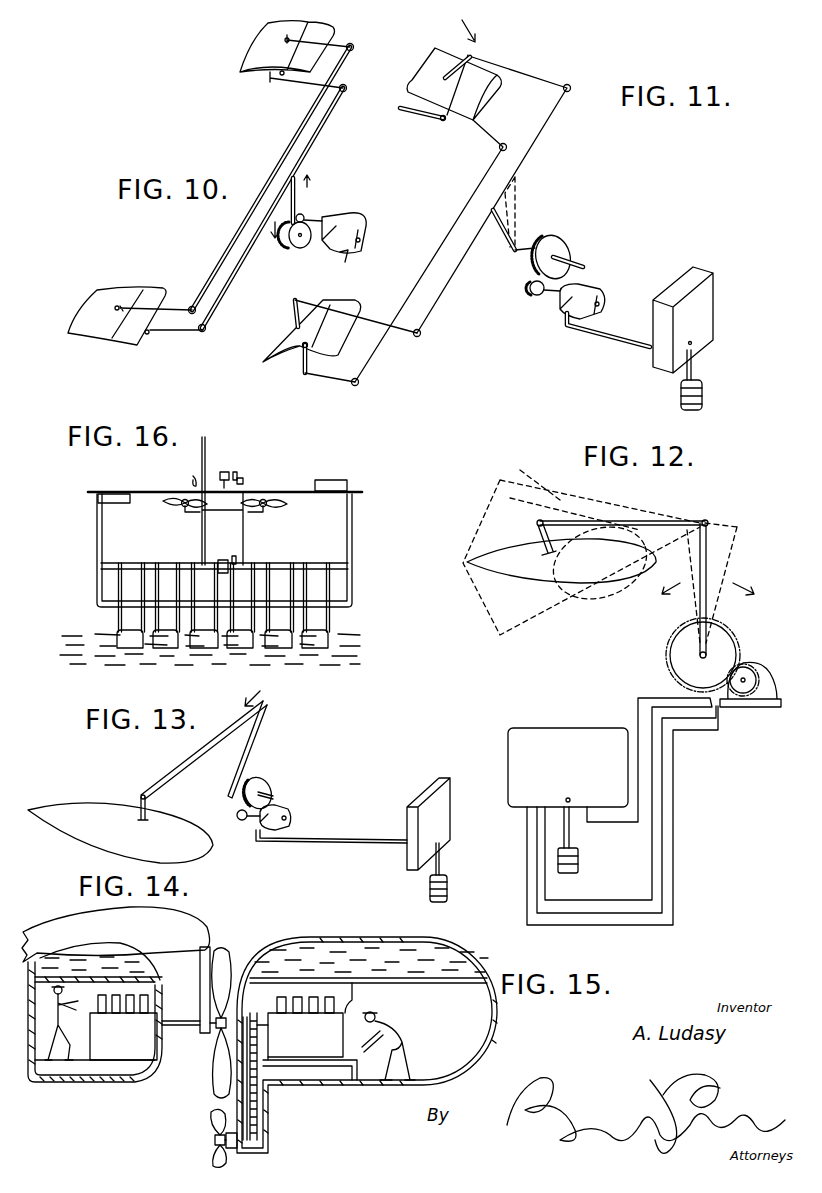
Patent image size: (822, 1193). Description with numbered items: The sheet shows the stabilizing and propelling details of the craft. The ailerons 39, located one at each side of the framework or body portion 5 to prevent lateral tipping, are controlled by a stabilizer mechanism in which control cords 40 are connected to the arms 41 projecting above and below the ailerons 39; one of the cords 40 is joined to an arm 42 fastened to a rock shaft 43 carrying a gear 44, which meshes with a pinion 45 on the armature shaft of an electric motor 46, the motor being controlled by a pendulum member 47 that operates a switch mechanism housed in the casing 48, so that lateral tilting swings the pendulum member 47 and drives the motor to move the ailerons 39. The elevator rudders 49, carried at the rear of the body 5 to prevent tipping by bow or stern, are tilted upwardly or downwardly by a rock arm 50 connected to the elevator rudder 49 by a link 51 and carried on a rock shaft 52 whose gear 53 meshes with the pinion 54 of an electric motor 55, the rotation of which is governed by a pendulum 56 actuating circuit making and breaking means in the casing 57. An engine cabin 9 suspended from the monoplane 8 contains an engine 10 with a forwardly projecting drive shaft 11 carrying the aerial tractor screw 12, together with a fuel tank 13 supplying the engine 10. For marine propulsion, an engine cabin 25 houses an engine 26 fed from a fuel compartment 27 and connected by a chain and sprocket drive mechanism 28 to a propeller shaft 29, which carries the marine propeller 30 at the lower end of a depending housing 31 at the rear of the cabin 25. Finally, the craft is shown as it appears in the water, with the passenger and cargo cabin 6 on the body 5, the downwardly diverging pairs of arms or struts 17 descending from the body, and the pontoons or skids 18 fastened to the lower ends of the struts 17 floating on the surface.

In FIG. 16, the framework or body portion 5 is at (90, 540).
In FIG. 16, the passenger and cargo cabin 6 is at (225, 503).
In FIG. 14, the monoplane 8 is at (116, 934).
In FIG. 14, the engine cabin 9 is at (152, 1066).
In FIG. 14, the engine 10 is at (123, 1027).
In FIG. 14, the drive shaft 11 is at (172, 1019).
In FIG. 16, the tractor screw or propeller 12 is at (258, 510).
In FIG. 14, the tractor screw or propeller 12 is at (226, 966).
In FIG. 14, the fuel tank 13 is at (143, 955).
In FIG. 16, the arms or struts 17 is at (328, 624).
In FIG. 16, the pontoon or skid 18 is at (117, 632).
In FIG. 15, the engine cabin 25 is at (493, 1047).
In FIG. 15, the engine 26 is at (304, 1020).
In FIG. 15, the compartment 27 is at (445, 965).
In FIG. 15, the chain and sprocket drive mechanism 28 is at (262, 1106).
In FIG. 14, the propeller shaft 29 is at (213, 1124).
In FIG. 14, the marine propeller 30 is at (212, 1149).
In FIG. 15, the depending housing 31 is at (268, 1133).
In FIG. 10, the ailerons 39 is at (245, 57).
In FIG. 11, the ailerons 39 is at (432, 66).
In FIG. 16, the ailerons 39 is at (331, 480).
In FIG. 10, the control cords 40 is at (283, 161).
In FIG. 11, the control cords 40 is at (497, 164).
In FIG. 10, the arms 41 is at (268, 82).
In FIG. 11, the arms 41 is at (455, 70).
In FIG. 10, the arm 42 is at (296, 192).
In FIG. 11, the arm 42 is at (502, 235).
In FIG. 11, the rock shaft 43 is at (583, 265).
In FIG. 10, the gear 44 is at (297, 246).
In FIG. 11, the gear 44 is at (556, 240).
In FIG. 10, the pinion 45 is at (306, 216).
In FIG. 11, the pinion 45 is at (530, 296).
In FIG. 10, the electric motor 46 is at (356, 222).
In FIG. 11, the electric motor 46 is at (592, 290).
In FIG. 11, the pendulum member 47 is at (696, 375).
In FIG. 11, the casing 48 is at (683, 320).
In FIG. 12, the elevator rudders 49 is at (493, 568).
In FIG. 12, the rock arm 50 is at (707, 561).
In FIG. 13, the rock arm 50 is at (250, 749).
In FIG. 12, the link 51 is at (553, 520).
In FIG. 13, the link 51 is at (177, 773).
In FIG. 12, the rock shaft 52 is at (699, 656).
In FIG. 13, the rock shaft 52 is at (273, 797).
In FIG. 12, the gear 53 is at (680, 640).
In FIG. 13, the gear 53 is at (260, 788).
In FIG. 12, the pinion 54 is at (744, 667).
In FIG. 13, the pinion 54 is at (237, 815).
In FIG. 12, the electric motor 55 is at (766, 678).
In FIG. 13, the electric motor 55 is at (290, 810).
In FIG. 12, the pendulum 56 is at (567, 835).
In FIG. 13, the pendulum 56 is at (441, 861).
In FIG. 12, the casing 57 is at (568, 767).
In FIG. 13, the casing 57 is at (428, 824).